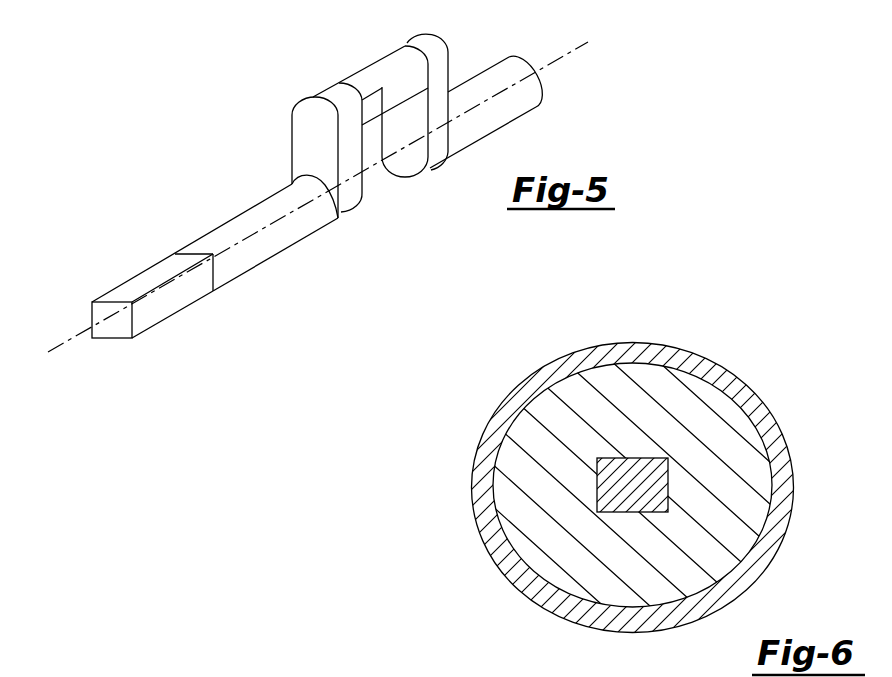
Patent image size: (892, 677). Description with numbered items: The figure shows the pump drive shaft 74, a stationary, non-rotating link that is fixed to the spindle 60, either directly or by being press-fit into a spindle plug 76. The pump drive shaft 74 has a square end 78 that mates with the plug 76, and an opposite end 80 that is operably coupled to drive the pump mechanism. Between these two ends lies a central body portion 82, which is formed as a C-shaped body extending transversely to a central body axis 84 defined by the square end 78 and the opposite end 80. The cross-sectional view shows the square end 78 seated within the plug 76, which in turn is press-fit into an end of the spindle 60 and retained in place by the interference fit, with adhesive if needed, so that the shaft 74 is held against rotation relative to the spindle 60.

In FIG. 5, the pump drive shaft 74 is at (170, 235).
In FIG. 5, the square end 78 is at (118, 328).
In FIG. 6, the square end 78 is at (643, 494).
In FIG. 5, the central body axis 84 is at (78, 336).
In FIG. 5, the central body portion 82 is at (370, 76).
In FIG. 5, the opposite end 80 is at (512, 102).
In FIG. 6, the spindle 60 is at (750, 382).
In FIG. 6, the spindle plug 76 is at (743, 518).